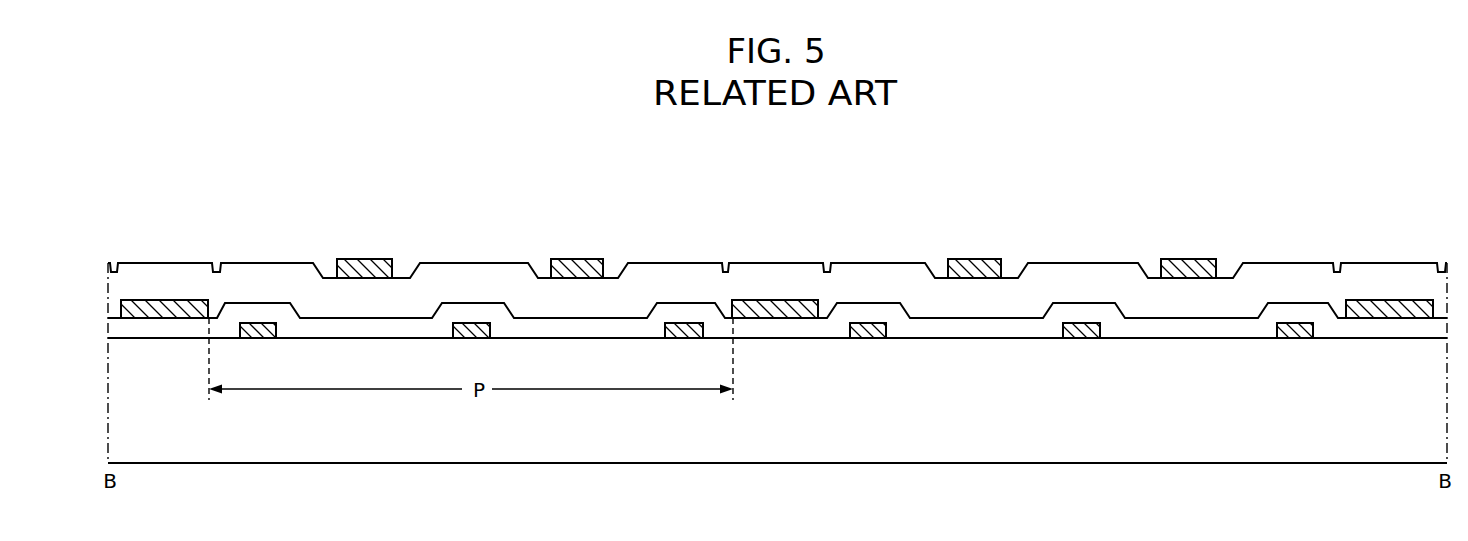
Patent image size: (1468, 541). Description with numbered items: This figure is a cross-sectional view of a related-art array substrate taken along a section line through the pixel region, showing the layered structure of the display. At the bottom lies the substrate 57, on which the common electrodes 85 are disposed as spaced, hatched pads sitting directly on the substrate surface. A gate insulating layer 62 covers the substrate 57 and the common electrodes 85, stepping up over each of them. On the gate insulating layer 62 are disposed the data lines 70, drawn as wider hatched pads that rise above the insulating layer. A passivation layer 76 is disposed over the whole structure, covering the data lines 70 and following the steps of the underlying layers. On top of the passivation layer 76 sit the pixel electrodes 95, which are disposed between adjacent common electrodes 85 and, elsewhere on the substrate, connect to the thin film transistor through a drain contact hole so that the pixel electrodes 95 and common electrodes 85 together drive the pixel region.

The substrate 57 is at (1378, 422).
The gate insulating layer 62 is at (924, 328).
The data line 70 is at (168, 300).
The passivation layer 76 is at (1009, 297).
The common electrode 85 is at (254, 325).
The pixel electrode 95 is at (365, 272).